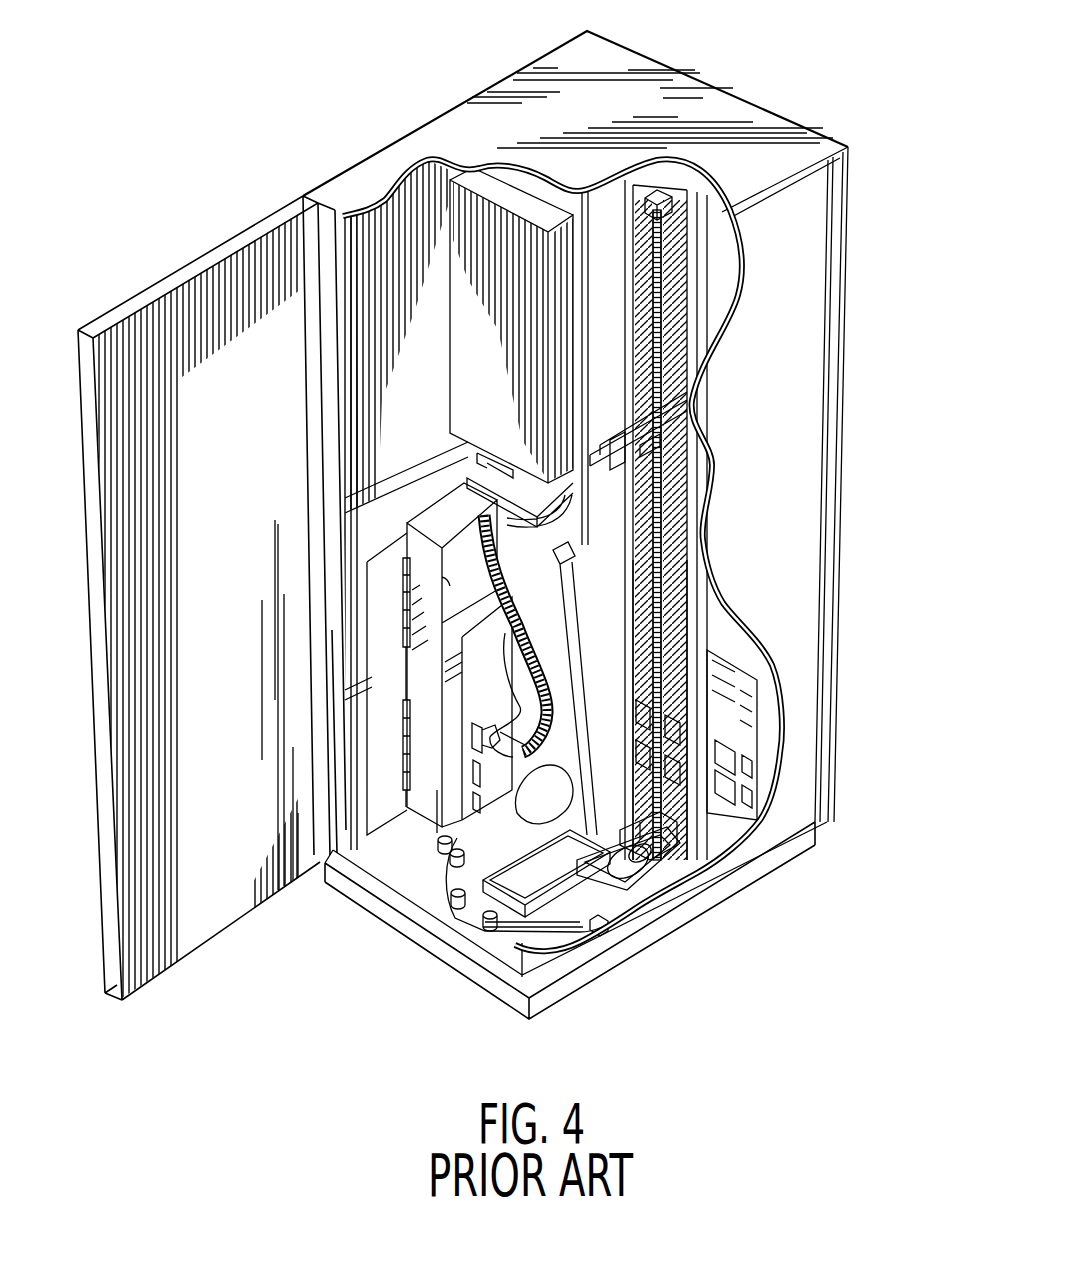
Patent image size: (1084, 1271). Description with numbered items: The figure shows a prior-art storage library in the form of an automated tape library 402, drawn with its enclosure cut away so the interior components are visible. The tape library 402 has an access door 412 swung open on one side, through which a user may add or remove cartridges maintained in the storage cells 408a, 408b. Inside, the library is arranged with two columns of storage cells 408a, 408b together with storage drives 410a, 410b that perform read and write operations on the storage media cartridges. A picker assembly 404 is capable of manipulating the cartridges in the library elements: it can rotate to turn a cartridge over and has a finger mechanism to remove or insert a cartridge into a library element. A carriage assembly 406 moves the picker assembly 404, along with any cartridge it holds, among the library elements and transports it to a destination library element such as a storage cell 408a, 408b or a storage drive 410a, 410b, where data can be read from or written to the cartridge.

The automated tape library 402 is at (256, 166).
The access door 412 is at (172, 372).
The carriage assembly 406 is at (672, 342).
The picker assembly 404 is at (675, 447).
The storage cell 408a is at (670, 620).
The storage cell 408b is at (745, 707).
The storage drive 410a is at (672, 742).
The storage drive 410b is at (747, 779).